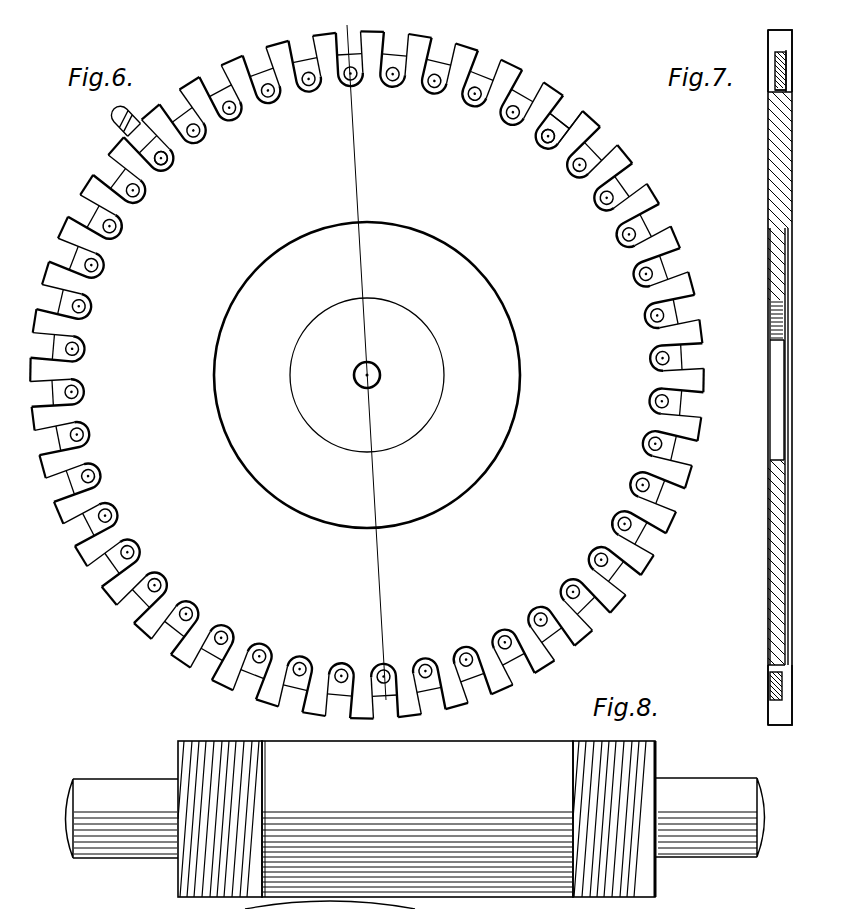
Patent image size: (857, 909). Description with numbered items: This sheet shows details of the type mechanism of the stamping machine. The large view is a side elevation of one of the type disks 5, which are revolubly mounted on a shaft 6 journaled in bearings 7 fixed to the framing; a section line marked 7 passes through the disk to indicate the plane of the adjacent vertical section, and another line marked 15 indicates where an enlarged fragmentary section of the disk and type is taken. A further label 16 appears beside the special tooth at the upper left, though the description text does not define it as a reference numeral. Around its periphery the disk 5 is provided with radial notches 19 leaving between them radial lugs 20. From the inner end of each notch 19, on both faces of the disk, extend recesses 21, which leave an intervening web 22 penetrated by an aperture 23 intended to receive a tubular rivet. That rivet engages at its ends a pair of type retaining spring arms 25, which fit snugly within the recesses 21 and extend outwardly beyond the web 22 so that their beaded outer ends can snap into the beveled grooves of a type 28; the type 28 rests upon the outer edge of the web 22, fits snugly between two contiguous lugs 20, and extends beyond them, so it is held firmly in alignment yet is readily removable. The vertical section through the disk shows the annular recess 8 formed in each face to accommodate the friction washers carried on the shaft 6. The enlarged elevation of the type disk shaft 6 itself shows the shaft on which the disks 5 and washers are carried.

In FIG. 6, the type disk 5 is at (379, 375).
In FIG. 7, the type disk 5 is at (770, 620).
In FIG. 8, the shaft 6 is at (503, 753).
In FIG. 6, the bearings 7 is at (367, 366).
In FIG. 7, the annular recess 8 is at (790, 512).
In FIG. 6, the line 15 15 is at (175, 168).
In FIG. 6, the tooth tip 16 is at (124, 116).
In FIG. 6, the radial notches 19 is at (605, 145).
In FIG. 6, the radial lugs 20 is at (622, 163).
In FIG. 7, the radial lugs 20 is at (778, 44).
In FIG. 6, the recesses 21 is at (562, 143).
In FIG. 7, the recesses 21 is at (776, 84).
In FIG. 6, the web 22 is at (540, 122).
In FIG. 7, the web 22 is at (776, 92).
In FIG. 6, the aperture 23 is at (552, 133).
In FIG. 7, the aperture 23 is at (777, 76).
In FIG. 6, the type retaining spring arms 25 is at (138, 133).
In FIG. 6, the type 28 is at (128, 122).